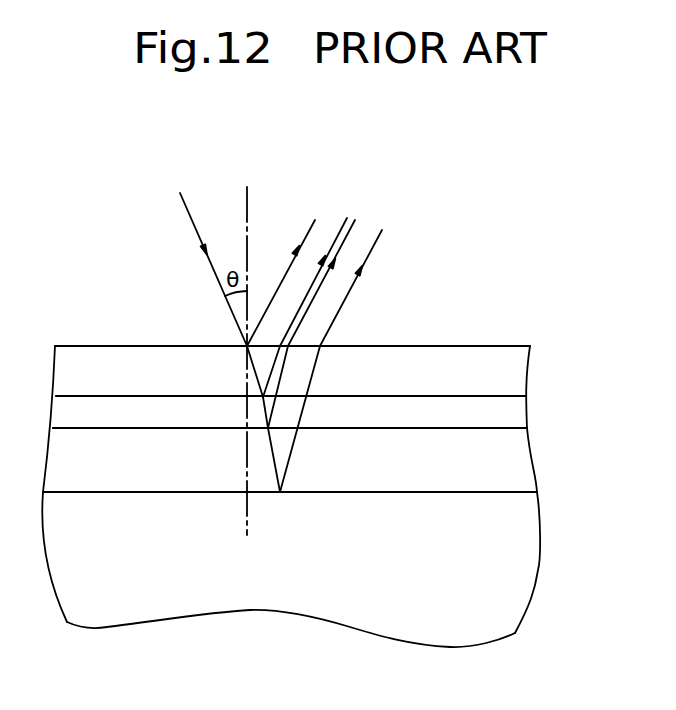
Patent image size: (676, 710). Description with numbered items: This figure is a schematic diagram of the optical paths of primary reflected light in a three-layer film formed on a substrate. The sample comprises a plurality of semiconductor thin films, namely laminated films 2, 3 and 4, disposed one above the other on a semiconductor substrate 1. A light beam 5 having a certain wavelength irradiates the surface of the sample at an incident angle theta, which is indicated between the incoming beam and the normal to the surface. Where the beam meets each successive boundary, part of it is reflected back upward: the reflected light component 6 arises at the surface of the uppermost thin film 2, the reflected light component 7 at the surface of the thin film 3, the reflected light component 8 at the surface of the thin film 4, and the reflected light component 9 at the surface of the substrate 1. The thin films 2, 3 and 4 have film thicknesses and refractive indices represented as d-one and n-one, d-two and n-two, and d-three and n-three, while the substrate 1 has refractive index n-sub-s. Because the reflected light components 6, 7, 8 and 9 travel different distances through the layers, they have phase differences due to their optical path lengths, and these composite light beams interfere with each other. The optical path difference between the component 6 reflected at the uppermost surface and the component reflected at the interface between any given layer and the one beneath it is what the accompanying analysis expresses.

The semiconductor substrate 1 is at (523, 568).
The semiconductor thin film 2 is at (508, 370).
The semiconductor thin film 3 is at (513, 413).
The semiconductor thin film 4 is at (517, 463).
The light beam 5 is at (180, 193).
The primary reflected light component 6 is at (316, 214).
The primary reflected light component 7 is at (348, 215).
The primary reflected light component 8 is at (357, 218).
The primary reflected light component 9 is at (382, 230).